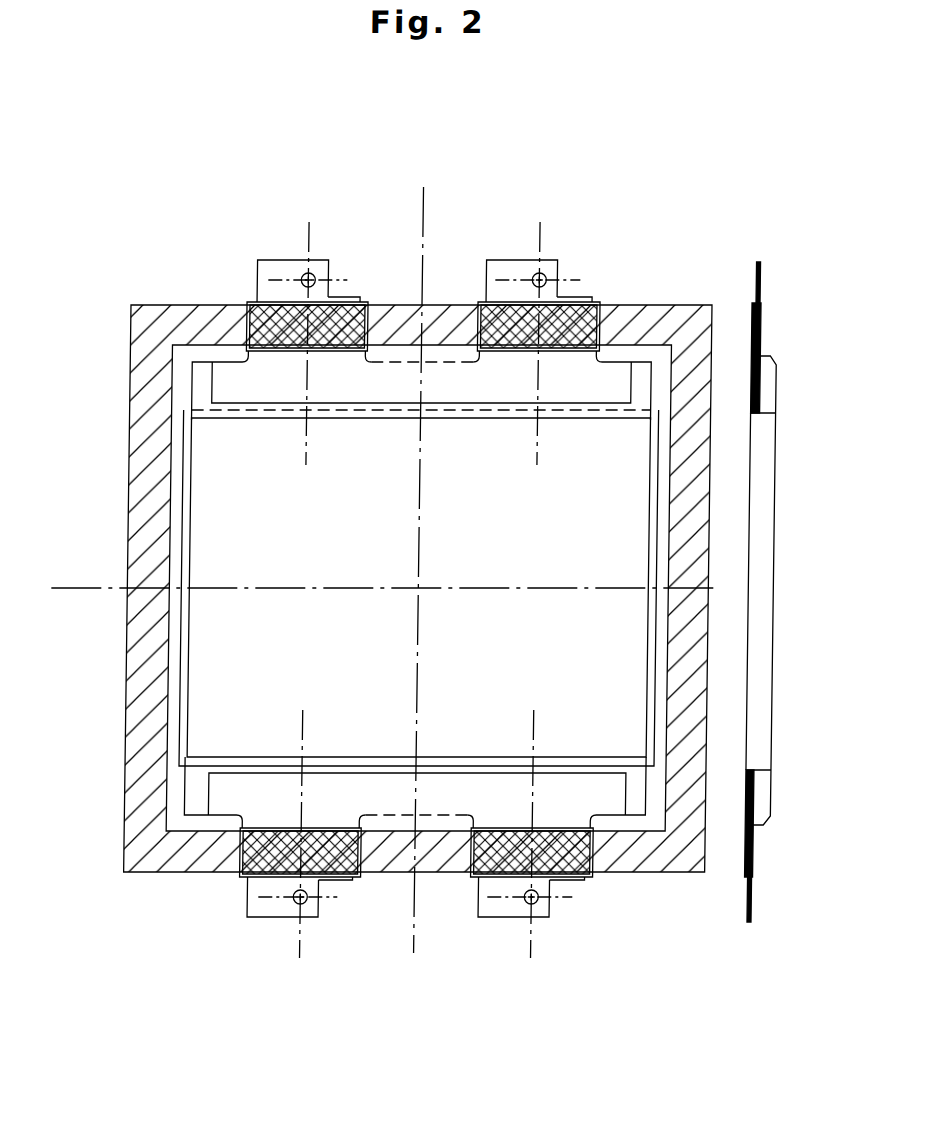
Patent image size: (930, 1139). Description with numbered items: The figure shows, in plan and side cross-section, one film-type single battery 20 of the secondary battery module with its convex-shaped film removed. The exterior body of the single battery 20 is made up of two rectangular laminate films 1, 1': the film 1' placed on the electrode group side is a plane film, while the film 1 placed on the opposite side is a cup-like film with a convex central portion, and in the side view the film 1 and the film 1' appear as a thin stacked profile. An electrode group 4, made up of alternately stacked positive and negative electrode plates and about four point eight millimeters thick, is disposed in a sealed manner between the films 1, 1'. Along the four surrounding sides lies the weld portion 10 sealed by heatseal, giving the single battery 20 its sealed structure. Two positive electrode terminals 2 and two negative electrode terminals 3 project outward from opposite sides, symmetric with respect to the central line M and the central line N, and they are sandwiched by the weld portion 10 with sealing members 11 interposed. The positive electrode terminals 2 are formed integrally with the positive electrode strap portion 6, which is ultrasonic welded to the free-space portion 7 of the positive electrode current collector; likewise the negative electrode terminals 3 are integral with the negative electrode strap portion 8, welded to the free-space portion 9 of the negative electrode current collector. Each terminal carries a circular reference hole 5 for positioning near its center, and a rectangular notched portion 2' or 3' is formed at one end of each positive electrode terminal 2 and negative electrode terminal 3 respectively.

The laminate film 1 is at (793, 546).
The laminate film 1' is at (734, 584).
The positive electrode terminal 2 is at (408, 234).
The rectangular notched portion 2' is at (476, 248).
The negative electrode terminal 3 is at (384, 945).
The rectangular notched portion 3' is at (451, 945).
The electrode group 4 is at (222, 576).
The reference hole 5 is at (305, 274).
The positive electrode strap portion 6 is at (233, 375).
The free-space portion of positive electrode current collector 7 is at (203, 378).
The negative electrode strap portion 8 is at (236, 800).
The free-space portion of negative electrode current collector 9 is at (194, 800).
The weld portion 10 is at (642, 328).
The sealing member 11 is at (366, 302).
The single battery 20 is at (446, 145).